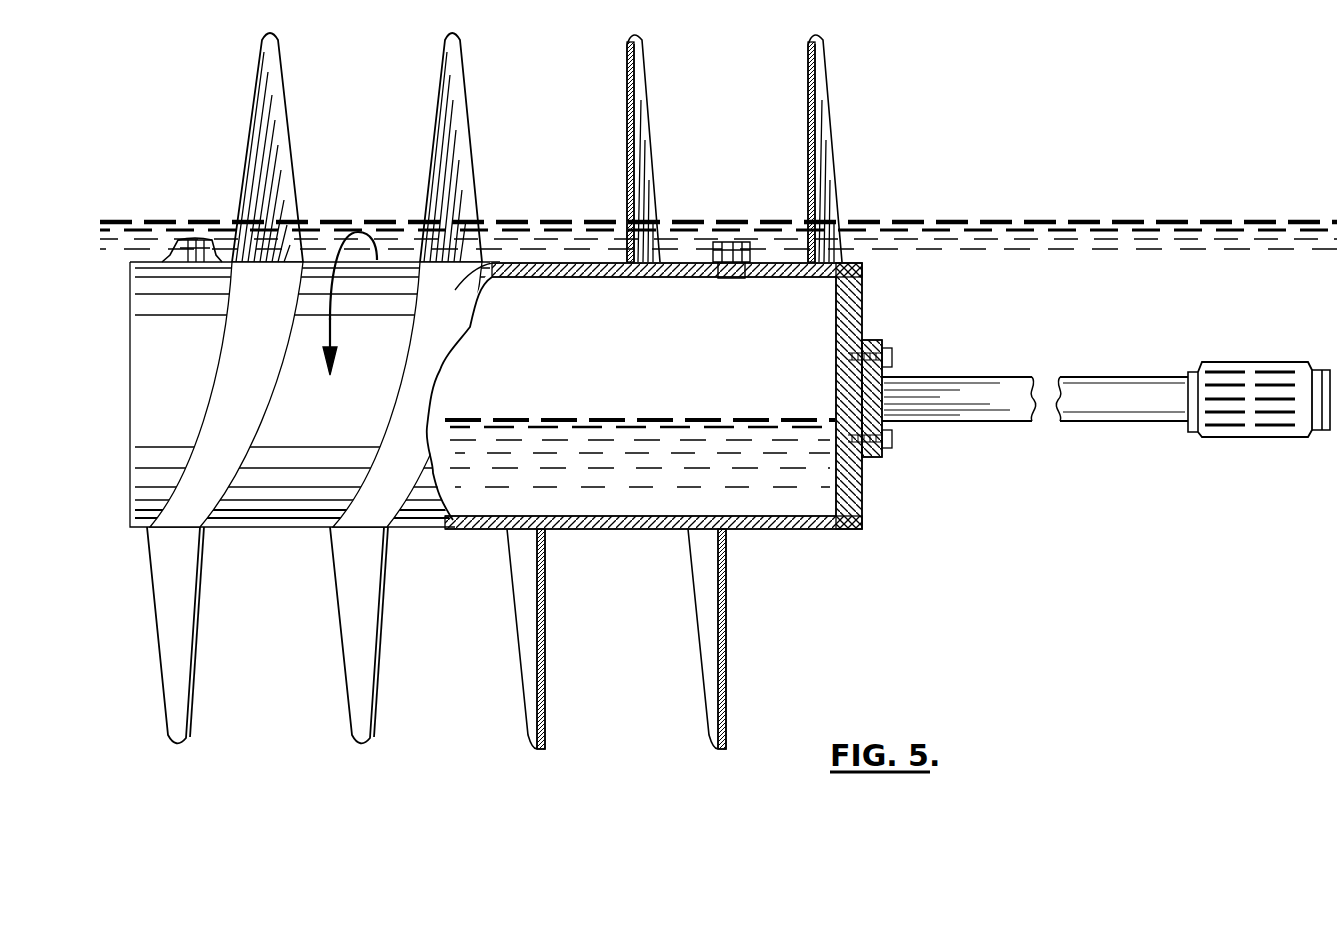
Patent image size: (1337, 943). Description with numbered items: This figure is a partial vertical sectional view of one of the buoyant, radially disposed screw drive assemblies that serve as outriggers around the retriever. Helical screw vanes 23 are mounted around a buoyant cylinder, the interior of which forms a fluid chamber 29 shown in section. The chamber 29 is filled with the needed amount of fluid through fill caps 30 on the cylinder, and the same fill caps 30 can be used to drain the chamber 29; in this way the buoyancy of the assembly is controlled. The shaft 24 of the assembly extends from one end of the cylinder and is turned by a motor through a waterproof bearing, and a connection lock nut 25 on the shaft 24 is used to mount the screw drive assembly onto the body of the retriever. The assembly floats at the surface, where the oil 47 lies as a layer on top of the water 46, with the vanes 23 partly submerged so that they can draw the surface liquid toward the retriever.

The screw vanes 23 is at (712, 633).
The shaft 24 is at (1115, 393).
The connection lock nut 25 is at (1263, 382).
The fluid chamber 29 is at (683, 369).
The fill caps 30 is at (190, 250).
The water 46 is at (1200, 252).
The oil 47 is at (1192, 225).